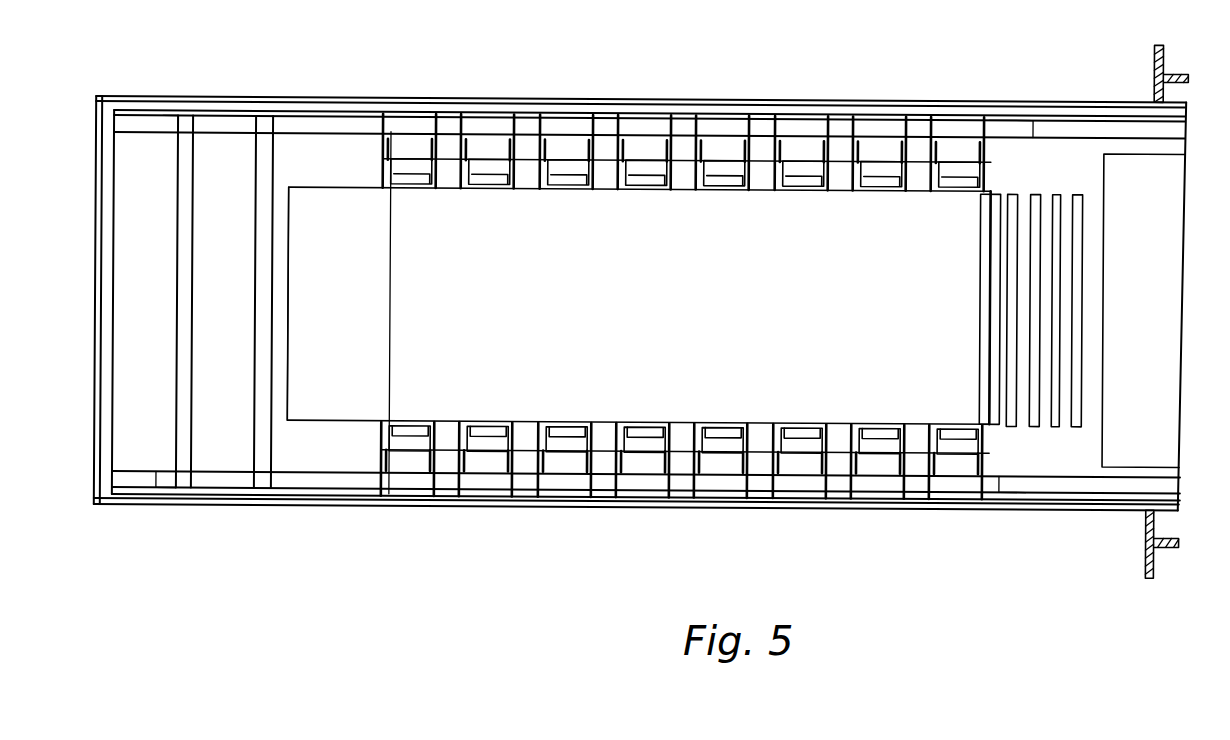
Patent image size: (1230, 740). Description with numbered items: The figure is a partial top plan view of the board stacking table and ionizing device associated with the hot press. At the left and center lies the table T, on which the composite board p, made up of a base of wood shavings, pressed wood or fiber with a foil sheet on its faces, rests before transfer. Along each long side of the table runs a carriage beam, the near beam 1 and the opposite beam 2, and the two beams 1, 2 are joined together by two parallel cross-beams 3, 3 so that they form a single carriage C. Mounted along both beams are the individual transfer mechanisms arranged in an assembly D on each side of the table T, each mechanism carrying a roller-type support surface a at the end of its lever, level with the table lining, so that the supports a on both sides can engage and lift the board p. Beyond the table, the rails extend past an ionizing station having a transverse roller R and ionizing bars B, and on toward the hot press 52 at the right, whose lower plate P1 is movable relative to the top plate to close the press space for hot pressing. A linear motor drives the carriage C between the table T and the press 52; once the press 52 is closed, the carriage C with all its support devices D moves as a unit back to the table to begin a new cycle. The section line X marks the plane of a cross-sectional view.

The carriage beam 1 is at (286, 127).
The carriage beam 2 is at (322, 487).
The cross-beams 3 is at (183, 244).
The hot press 52 is at (1153, 56).
The support surface a is at (410, 175).
The ionizing bars B is at (1040, 211).
The carriage C is at (683, 88).
The assembly of transfer mechanisms D is at (545, 91).
The board base P is at (407, 378).
The lower plate P1 is at (1115, 437).
The transverse roller R is at (1013, 193).
The table T is at (330, 196).
The section line X- X is at (128, 305).